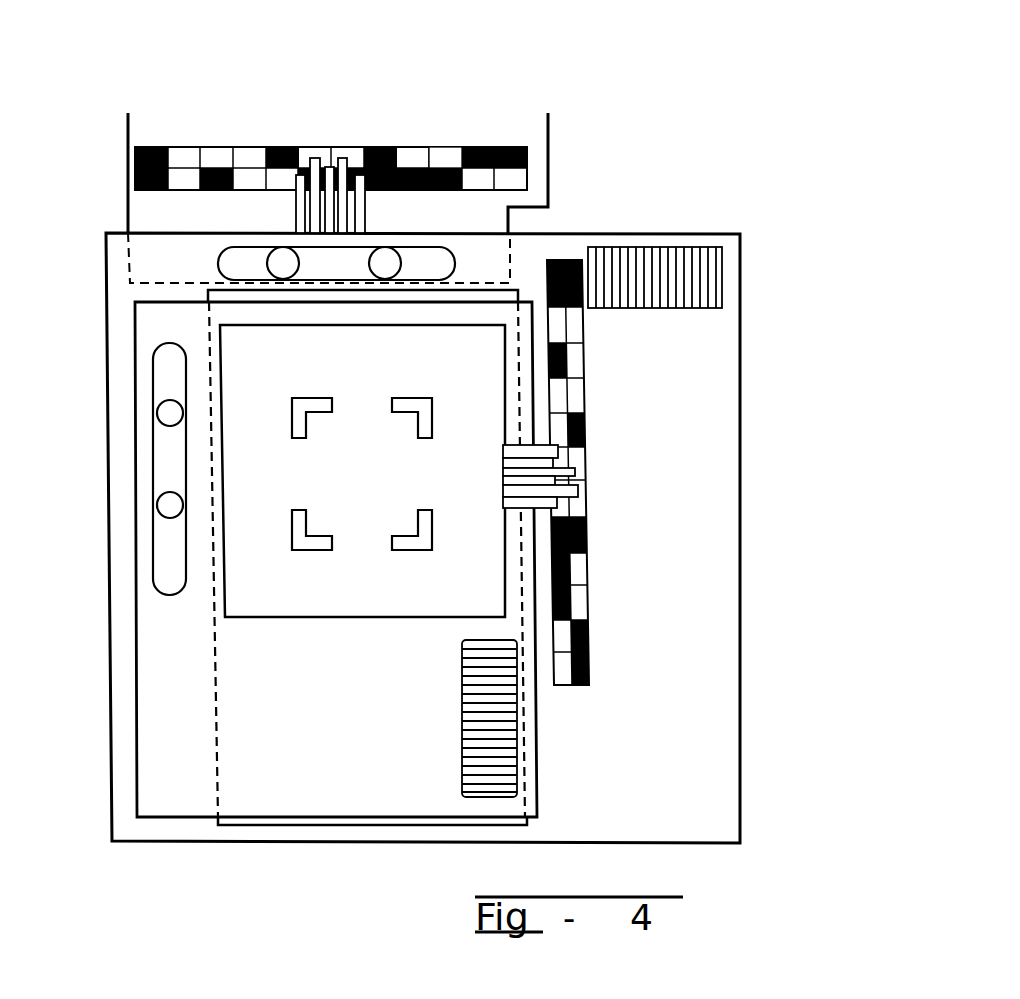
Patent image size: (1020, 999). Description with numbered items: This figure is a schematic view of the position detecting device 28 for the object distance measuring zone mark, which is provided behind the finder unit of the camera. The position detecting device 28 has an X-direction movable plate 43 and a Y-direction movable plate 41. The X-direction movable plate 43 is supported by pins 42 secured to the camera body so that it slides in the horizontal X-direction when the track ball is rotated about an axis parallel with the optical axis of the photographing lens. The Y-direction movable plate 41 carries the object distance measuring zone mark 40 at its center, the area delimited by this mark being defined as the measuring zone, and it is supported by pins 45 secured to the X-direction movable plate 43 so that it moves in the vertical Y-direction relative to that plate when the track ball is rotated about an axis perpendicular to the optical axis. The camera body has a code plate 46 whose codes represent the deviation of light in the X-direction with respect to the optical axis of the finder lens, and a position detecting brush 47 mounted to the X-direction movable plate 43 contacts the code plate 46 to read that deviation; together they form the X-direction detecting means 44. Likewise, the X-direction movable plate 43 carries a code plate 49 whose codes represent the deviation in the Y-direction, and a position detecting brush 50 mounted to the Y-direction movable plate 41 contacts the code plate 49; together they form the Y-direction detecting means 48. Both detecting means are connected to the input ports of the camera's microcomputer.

The position detecting device 28 is at (670, 75).
The object distance measuring zone mark 40 is at (315, 551).
The Y-direction movable plate 41 is at (402, 608).
The pins 42 is at (375, 273).
The X-direction movable plate 43 is at (738, 797).
The X-direction detecting means 44 is at (365, 142).
The pins 45 is at (163, 420).
The code plate 46 is at (437, 154).
The position detecting brush 47 is at (294, 205).
The Y-direction detecting means 48 is at (590, 483).
The code plate 49 is at (585, 362).
The position detecting brush 50 is at (527, 442).